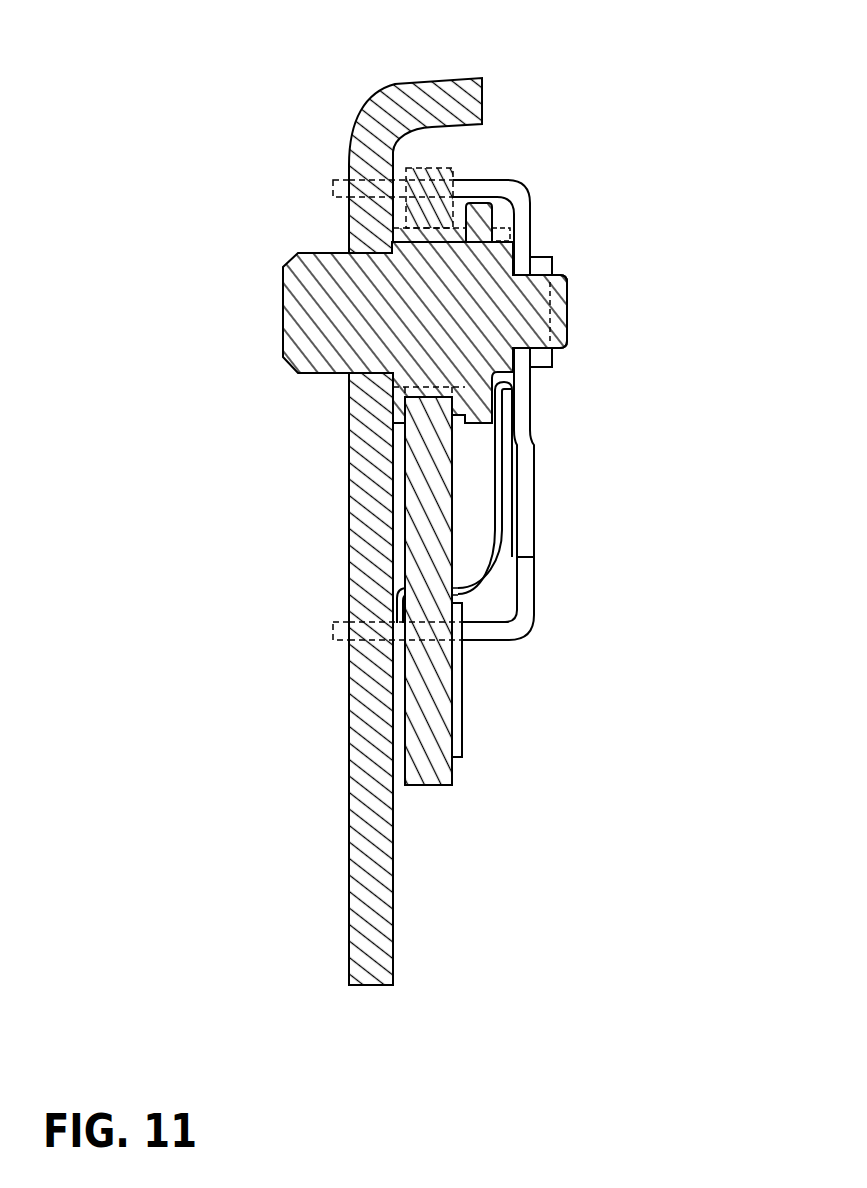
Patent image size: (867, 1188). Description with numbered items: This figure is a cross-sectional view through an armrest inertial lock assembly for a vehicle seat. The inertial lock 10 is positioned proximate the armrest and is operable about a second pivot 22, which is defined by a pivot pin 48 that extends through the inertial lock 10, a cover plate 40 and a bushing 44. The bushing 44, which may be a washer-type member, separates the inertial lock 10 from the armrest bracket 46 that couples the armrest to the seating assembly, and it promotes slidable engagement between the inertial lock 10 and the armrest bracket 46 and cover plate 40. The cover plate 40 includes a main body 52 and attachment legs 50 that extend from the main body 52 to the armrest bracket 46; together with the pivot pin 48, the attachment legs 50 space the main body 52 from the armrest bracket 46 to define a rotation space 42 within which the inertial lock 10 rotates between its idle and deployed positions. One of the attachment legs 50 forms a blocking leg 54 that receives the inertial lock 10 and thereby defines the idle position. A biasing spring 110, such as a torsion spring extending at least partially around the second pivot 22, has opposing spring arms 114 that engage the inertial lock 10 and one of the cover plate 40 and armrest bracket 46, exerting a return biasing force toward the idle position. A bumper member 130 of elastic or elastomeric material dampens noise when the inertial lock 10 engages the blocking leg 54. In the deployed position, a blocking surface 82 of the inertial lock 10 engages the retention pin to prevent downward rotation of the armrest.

The inertial lock 10 is at (430, 487).
The second pivot 22 is at (283, 307).
The cover plate 40 is at (575, 414).
The rotation space 42 is at (477, 510).
The bushing 44 is at (400, 228).
The armrest bracket 46 is at (383, 112).
The pivot pin 48 is at (567, 307).
The attachment legs 50 is at (507, 187).
The main body 52 is at (535, 503).
The blocking leg 54 is at (482, 643).
The blocking surface 82 is at (432, 767).
The biasing spring 110 is at (495, 237).
The spring arms 114 is at (503, 532).
The bumper member 130 is at (463, 712).